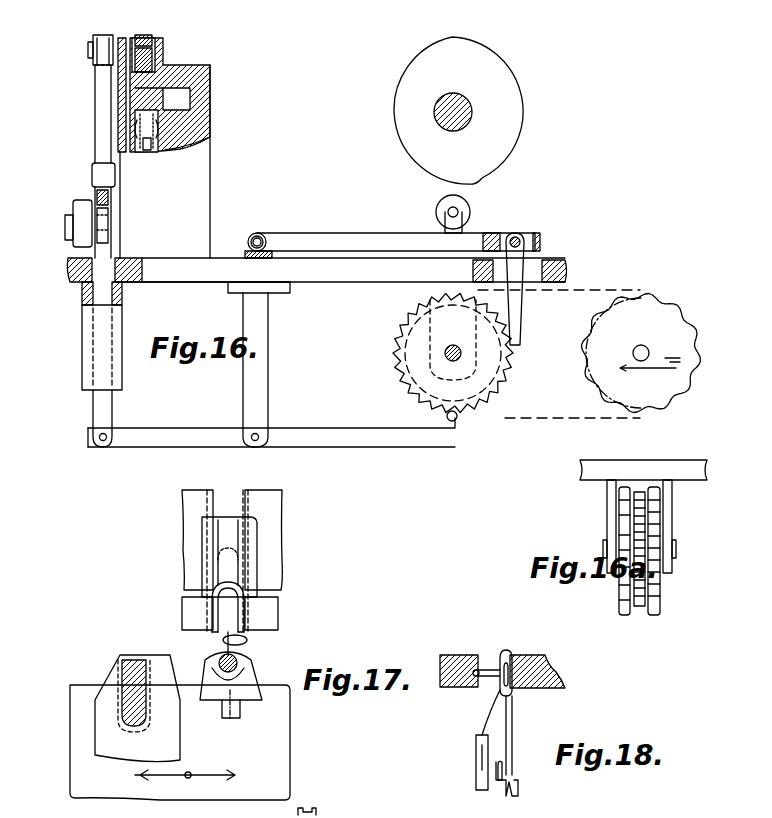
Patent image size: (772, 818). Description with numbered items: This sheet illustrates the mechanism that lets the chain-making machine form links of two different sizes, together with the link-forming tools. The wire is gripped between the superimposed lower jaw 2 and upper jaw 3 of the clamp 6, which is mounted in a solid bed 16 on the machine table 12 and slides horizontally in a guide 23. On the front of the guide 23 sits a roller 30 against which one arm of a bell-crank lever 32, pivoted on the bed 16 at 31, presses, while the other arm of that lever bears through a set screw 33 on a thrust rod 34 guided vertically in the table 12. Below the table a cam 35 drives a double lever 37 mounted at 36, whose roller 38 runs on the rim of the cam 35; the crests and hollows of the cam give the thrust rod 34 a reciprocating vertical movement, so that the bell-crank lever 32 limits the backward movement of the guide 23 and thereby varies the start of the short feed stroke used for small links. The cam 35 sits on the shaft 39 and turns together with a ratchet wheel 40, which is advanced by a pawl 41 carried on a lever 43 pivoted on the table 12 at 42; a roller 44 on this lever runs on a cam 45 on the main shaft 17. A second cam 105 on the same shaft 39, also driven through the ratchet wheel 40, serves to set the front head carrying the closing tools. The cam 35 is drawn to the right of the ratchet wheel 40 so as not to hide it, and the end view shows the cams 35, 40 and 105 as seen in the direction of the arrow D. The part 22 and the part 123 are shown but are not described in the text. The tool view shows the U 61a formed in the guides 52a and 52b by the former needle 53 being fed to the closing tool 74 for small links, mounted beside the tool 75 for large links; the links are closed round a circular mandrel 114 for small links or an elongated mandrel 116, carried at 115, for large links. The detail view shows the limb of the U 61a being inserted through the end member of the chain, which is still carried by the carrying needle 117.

In FIG. 16, the lower jaw 2 is at (165, 58).
In FIG. 16, the upper jaw 3 is at (152, 37).
In FIG. 16, the clamp 6 is at (142, 35).
In FIG. 16, the machine table 12 is at (130, 258).
In FIG. 16A, the machine table 12 is at (672, 462).
In FIG. 16, the bed 16 is at (206, 198).
In FIG. 16, the main shaft 17 is at (466, 118).
In FIG. 16, the bearing 22 is at (200, 146).
In FIG. 16, the guide 23 is at (118, 100).
In FIG. 16, the roller 30 is at (101, 35).
In FIG. 16, the pivot 31 is at (73, 222).
In FIG. 16, the bell-crank lever 32 is at (98, 137).
In FIG. 16, the set screw 33 is at (92, 166).
In FIG. 16, the thrust rod 34 is at (92, 292).
In FIG. 16, the cam 35 is at (396, 355).
In FIG. 16A, the cam 35 is at (619, 593).
In FIG. 16, the lever mounting 36 is at (258, 437).
In FIG. 16, the double lever 37 is at (135, 445).
In FIG. 16, the roller 38 is at (456, 420).
In FIG. 16, the shaft 39 is at (453, 345).
In FIG. 16A, the shaft 39 is at (603, 547).
In FIG. 16, the ratchet wheel 40 is at (500, 382).
In FIG. 16A, the ratchet wheel 40 is at (640, 526).
In FIG. 16, the pawl 41 is at (520, 300).
In FIG. 16, the pivot 42 is at (258, 240).
In FIG. 16, the lever 43 is at (336, 242).
In FIG. 16, the roller 44 is at (470, 206).
In FIG. 16, the cam 45 is at (518, 91).
In FIG. 16, the cam 105 is at (512, 360).
In FIG. 16A, the cam 105 is at (660, 591).
In FIG. 17, the guide 52a is at (280, 565).
In FIG. 17, the guide 52b is at (252, 610).
In FIG. 18, the guide 52b is at (507, 685).
In FIG. 17, the former needle 53 is at (200, 553).
In FIG. 17, the U 61a is at (220, 606).
In FIG. 18, the U 61a is at (482, 663).
In FIG. 17, the closing tool 74 is at (255, 676).
In FIG. 17, the closing tool 75 is at (170, 740).
In FIG. 17, the mandrel 114 is at (255, 655).
In FIG. 17, the mandrel mounting 115 is at (335, 817).
In FIG. 17, the mandrel 116 is at (134, 658).
In FIG. 17, the carrying needle 117 is at (224, 632).
In FIG. 18, the carrying needle 117 is at (478, 738).
In FIG. 17, the element 123 is at (424, 807).